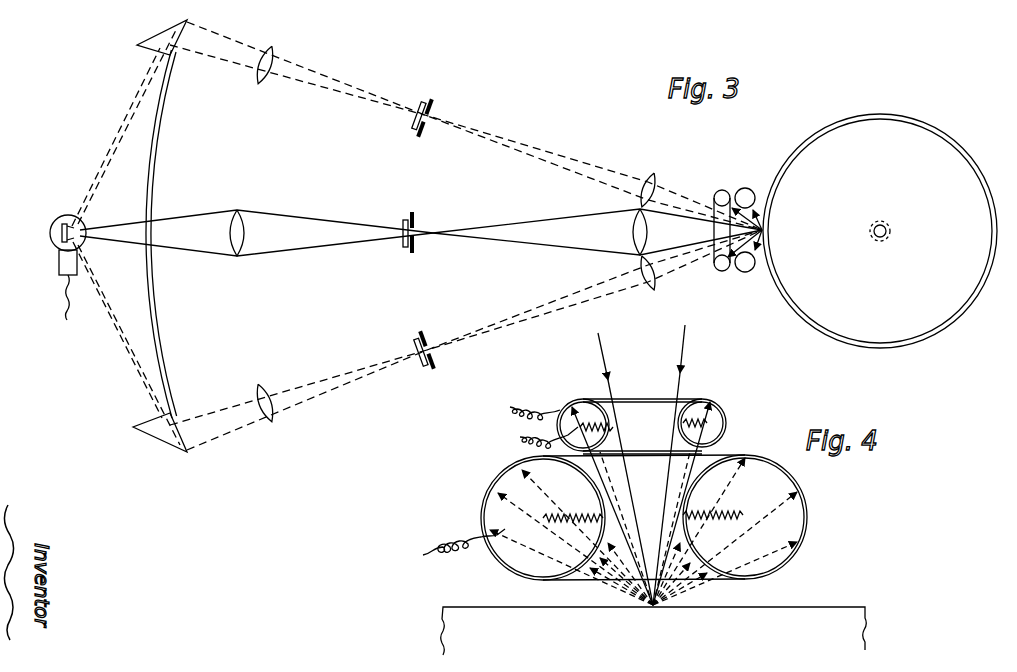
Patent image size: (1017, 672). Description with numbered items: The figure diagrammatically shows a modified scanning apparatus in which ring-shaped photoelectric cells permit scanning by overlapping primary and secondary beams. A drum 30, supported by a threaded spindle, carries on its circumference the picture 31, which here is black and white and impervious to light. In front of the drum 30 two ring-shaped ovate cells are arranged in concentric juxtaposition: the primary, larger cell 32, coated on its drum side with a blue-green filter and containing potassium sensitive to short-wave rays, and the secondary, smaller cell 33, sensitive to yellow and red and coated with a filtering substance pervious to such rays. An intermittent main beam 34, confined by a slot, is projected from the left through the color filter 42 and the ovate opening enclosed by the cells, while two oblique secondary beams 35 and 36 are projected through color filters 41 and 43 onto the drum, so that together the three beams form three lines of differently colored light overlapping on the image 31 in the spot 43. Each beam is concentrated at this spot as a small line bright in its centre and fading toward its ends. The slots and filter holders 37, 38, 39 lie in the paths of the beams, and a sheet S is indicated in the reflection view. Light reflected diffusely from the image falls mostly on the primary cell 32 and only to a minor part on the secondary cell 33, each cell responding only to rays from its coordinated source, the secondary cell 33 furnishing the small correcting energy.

In FIG. 3, the drum 30 is at (815, 328).
In FIG. 3, the picture 31 is at (820, 330).
In FIG. 3, the primary cell 32 is at (745, 292).
In FIG. 3, the secondary cell 33 is at (718, 231).
In FIG. 3, the main beam 34 is at (659, 232).
In FIG. 3, the secondary beam 35 is at (680, 266).
In FIG. 3, the secondary beam 36 is at (675, 193).
In FIG. 3, the slit 37 is at (433, 121).
In FIG. 3, the slit 38 is at (413, 236).
In FIG. 3, the slit 39 is at (434, 350).
In FIG. 3, the color filter 41 is at (424, 112).
In FIG. 3, the color filter 42 is at (403, 228).
In FIG. 3, the spot 43 is at (420, 350).
In FIG. 4, the sheet S is at (490, 485).